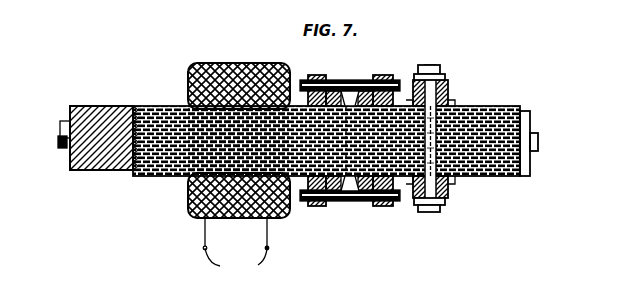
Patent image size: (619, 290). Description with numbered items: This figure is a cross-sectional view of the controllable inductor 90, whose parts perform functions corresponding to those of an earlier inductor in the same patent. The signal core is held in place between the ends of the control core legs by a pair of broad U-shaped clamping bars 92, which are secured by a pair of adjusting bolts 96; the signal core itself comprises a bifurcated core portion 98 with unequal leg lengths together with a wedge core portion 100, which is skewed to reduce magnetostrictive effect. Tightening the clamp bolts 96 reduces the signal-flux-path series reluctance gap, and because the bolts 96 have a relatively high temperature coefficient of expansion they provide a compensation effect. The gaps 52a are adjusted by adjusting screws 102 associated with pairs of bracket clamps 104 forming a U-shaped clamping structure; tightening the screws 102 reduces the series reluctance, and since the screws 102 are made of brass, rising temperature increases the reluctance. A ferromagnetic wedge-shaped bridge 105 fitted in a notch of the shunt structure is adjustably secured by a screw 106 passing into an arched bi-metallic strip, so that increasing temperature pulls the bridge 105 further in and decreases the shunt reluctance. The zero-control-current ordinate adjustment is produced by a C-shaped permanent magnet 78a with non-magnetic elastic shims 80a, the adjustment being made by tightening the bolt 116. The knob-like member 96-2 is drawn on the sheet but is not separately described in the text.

The controllable inductor 90 is at (520, 84).
The C-shaped permanent magnet 78a is at (97, 87).
The non-magnetic elastic shims 80a is at (125, 164).
The bolt 116 is at (54, 114).
The knurled knob 96-2 is at (220, 55).
The wedge core portion 100 is at (236, 250).
The bracket clamps 104 is at (314, 68).
The adjusting screws 102 is at (340, 72).
The gaps 52a is at (336, 193).
The clamping bars 92 is at (440, 85).
The adjusting bolts 96 is at (433, 61).
The bifurcated core portion 98 is at (446, 97).
The wedge-shaped bridge 105 is at (520, 112).
The screw 106 is at (528, 134).